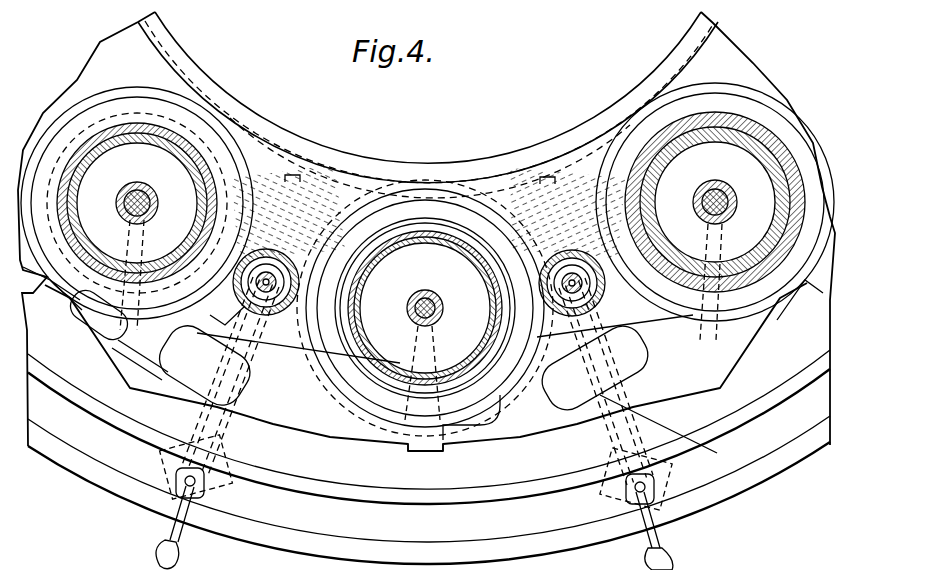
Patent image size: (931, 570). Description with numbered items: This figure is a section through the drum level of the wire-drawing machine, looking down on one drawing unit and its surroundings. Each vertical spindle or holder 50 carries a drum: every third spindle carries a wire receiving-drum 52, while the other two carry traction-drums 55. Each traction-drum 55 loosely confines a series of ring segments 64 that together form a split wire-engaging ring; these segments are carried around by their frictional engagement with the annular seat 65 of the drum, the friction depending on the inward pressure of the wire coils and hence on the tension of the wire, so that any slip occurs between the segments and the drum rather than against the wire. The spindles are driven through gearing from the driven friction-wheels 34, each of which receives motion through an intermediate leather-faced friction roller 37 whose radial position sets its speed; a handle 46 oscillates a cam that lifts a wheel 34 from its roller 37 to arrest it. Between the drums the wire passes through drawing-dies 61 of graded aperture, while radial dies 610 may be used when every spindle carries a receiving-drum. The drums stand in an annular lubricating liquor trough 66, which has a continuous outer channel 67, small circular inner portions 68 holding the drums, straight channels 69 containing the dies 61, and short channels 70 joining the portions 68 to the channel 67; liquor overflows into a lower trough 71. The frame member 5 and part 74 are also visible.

The housing 5 is at (426, 229).
The driven friction-wheel 34 is at (350, 152).
The intermediate friction roller 37 is at (375, 170).
The handle 46 is at (150, 548).
The spindle or holder 50 is at (140, 191).
The receiving-drum 52 is at (705, 113).
The traction-drum 55 is at (125, 187).
The drawing-die 61 is at (175, 390).
The ring segment 64 is at (137, 123).
The annular seat 65 is at (116, 203).
The liquor trough 66 is at (722, 400).
The outer channel 67 is at (312, 490).
The inner trough portion 68 is at (237, 172).
The straight channel 69 is at (298, 350).
The short channel 70 is at (425, 451).
The lower trough 71 is at (238, 500).
The bracket 74 is at (150, 400).
The radial die 610 is at (150, 350).